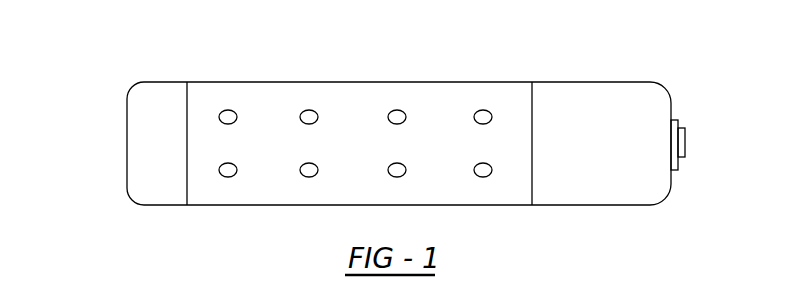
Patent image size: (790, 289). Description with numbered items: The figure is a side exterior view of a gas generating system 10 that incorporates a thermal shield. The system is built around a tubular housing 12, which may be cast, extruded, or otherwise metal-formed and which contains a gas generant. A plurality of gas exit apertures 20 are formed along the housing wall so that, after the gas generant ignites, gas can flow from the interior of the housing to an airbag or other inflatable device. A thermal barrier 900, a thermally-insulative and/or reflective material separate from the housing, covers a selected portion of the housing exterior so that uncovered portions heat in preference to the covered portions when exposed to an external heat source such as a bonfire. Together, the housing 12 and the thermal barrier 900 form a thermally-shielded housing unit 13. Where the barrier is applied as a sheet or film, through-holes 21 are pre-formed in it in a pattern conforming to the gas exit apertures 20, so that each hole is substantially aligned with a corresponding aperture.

The gas generating system 10 is at (755, 99).
The tubular housing 12 is at (628, 81).
The thermally-shielded housing unit 13 is at (187, 82).
The thermal barrier 900 is at (288, 134).
The gas exit apertures 20 is at (502, 72).
The through-holes 21 is at (483, 114).